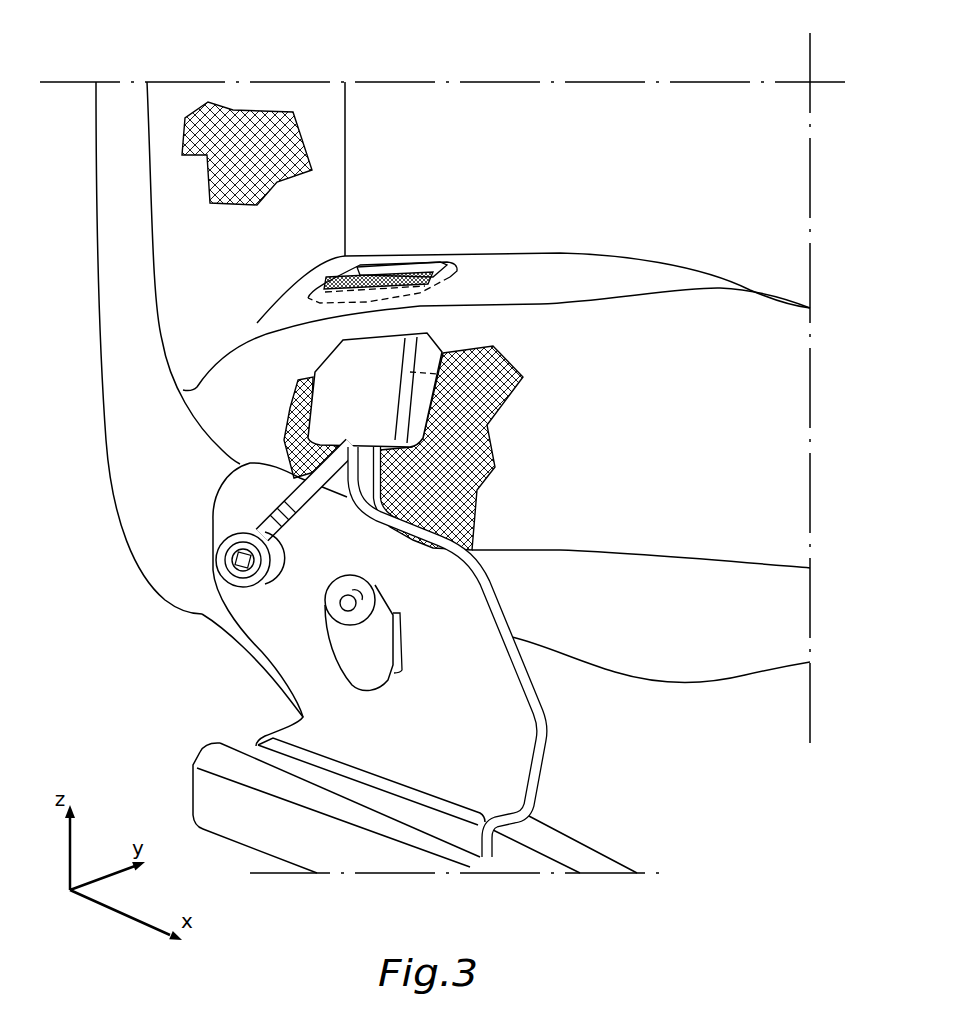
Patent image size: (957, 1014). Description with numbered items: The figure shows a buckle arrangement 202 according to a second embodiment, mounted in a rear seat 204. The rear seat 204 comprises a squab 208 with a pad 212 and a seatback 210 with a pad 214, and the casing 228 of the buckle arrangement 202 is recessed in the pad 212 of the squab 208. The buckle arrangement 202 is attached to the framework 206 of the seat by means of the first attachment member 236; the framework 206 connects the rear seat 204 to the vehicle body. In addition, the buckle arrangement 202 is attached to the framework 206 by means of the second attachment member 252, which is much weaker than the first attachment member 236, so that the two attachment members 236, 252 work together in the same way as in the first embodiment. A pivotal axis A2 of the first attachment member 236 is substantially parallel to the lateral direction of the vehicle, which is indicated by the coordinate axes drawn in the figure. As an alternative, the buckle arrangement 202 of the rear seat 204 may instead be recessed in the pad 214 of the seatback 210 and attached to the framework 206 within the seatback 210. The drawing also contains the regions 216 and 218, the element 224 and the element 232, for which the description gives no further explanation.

The buckle arrangement 202 is at (339, 585).
The rear seat 204 is at (692, 705).
The framework 206 is at (106, 151).
The squab 208 is at (745, 429).
The seatback 210 is at (690, 139).
The pad 212 is at (467, 456).
The pad 214 is at (240, 146).
The side panel 216 is at (657, 429).
The upper panel 218 is at (610, 157).
The fender 224 is at (221, 663).
The casing 228 is at (357, 406).
The sensor 232 is at (438, 375).
The first attachment member 236 is at (367, 537).
The second attachment member 252 is at (300, 503).
The pivotal axis A2 is at (350, 602).